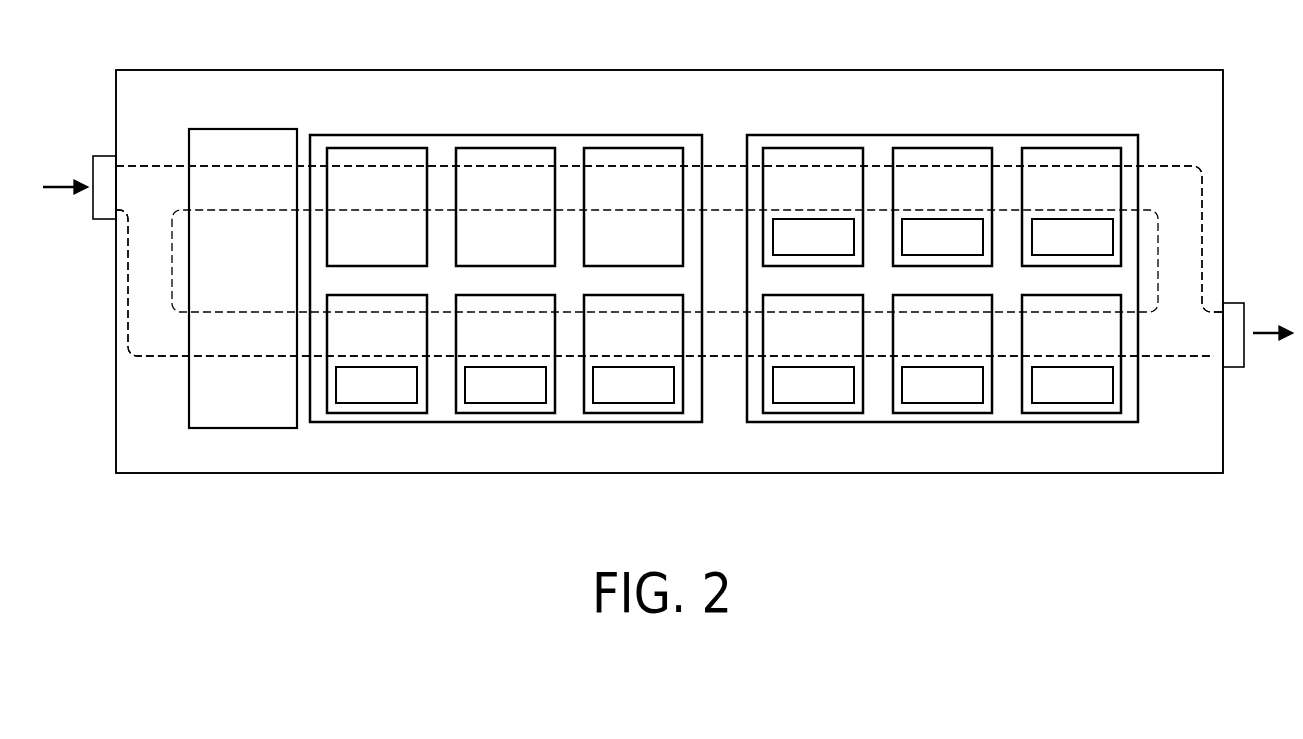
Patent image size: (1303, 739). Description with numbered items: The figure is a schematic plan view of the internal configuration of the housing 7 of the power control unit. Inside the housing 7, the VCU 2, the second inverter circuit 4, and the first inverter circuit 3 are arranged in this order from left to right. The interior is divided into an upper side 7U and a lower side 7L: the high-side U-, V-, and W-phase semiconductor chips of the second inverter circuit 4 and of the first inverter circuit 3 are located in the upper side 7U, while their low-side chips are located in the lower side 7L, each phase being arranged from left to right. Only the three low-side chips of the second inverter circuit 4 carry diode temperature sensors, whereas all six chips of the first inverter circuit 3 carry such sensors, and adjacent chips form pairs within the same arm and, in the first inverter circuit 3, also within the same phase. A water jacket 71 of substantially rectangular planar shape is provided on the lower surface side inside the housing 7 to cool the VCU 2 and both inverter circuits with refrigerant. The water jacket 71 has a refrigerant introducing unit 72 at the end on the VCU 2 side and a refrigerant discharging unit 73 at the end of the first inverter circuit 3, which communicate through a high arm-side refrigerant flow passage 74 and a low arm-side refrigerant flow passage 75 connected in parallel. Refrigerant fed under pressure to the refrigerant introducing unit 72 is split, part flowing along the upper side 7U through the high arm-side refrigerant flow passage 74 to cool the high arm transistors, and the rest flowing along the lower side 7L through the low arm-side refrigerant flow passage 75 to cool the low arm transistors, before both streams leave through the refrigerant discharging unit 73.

The housing 7 is at (287, 68).
The water jacket 71 is at (100, 97).
The refrigerant introducing unit 72 is at (102, 156).
The refrigerant discharging unit 73 is at (1237, 303).
The VCU 2 is at (269, 128).
The first inverter circuit 3 is at (1125, 127).
The second inverter circuit 4 is at (675, 134).
The high arm-side refrigerant flow passage 74 is at (715, 164).
The low arm-side refrigerant flow passage 75 is at (721, 357).
The upper side 7U is at (1182, 195).
The lower side 7L is at (1180, 377).